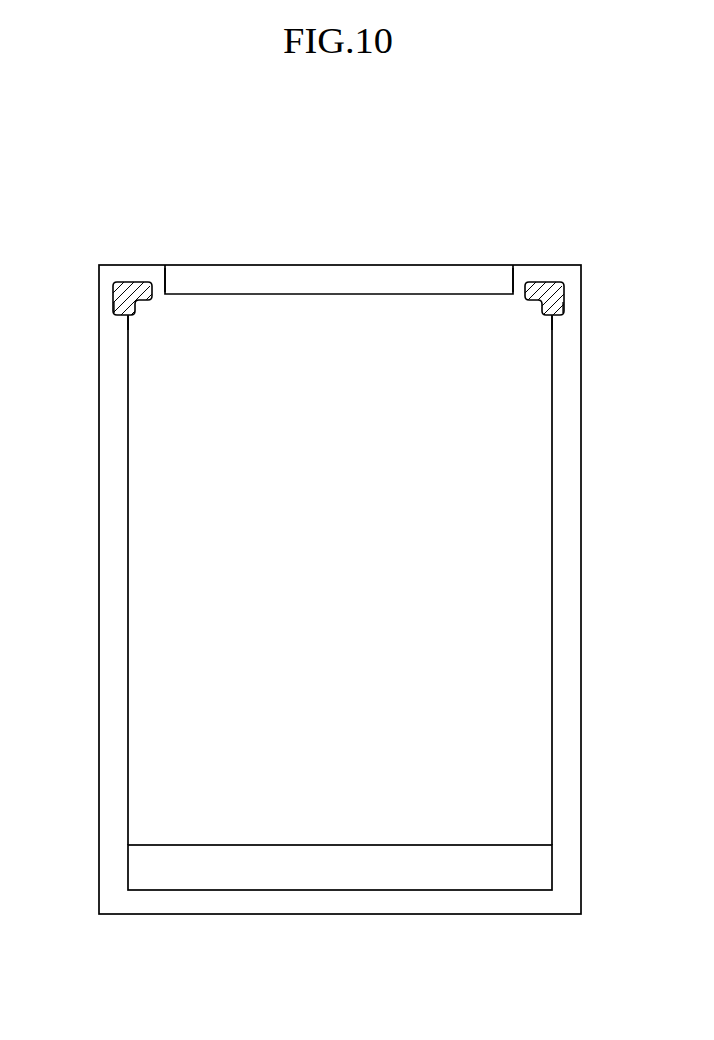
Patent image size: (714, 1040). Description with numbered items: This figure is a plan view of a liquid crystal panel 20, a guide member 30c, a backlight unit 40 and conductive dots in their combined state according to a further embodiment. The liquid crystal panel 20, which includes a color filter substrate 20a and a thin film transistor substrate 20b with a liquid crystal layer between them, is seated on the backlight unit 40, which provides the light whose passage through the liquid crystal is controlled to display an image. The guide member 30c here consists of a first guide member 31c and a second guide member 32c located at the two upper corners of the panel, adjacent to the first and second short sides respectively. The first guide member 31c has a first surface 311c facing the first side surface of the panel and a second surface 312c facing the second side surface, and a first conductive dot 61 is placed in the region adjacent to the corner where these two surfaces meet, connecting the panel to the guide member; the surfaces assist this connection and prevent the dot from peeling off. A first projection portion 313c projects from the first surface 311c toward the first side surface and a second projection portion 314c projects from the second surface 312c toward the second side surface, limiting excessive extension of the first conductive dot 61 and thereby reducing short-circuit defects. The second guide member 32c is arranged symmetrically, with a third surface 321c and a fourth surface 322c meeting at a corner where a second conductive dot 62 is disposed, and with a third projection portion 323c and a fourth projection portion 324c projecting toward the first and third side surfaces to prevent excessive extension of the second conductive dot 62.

The liquid crystal panel 20 is at (340, 632).
The color filter substrate 20a is at (383, 835).
The thin film transistor substrate 20b is at (327, 867).
The guide member 30c is at (338, 224).
The first guide member 31c is at (127, 251).
The second guide member 32c is at (551, 251).
The first surface 311c is at (135, 288).
The second surface 312c is at (113, 305).
The first projection portion 313c is at (163, 290).
The second projection portion 314c is at (118, 323).
The third surface 321c is at (543, 288).
The fourth surface 322c is at (564, 305).
The third projection portion 323c is at (514, 290).
The fourth projection portion 324c is at (559, 323).
The backlight unit 40 is at (193, 914).
The first conductive dot 61 is at (118, 293).
The second conductive dot 62 is at (559, 293).